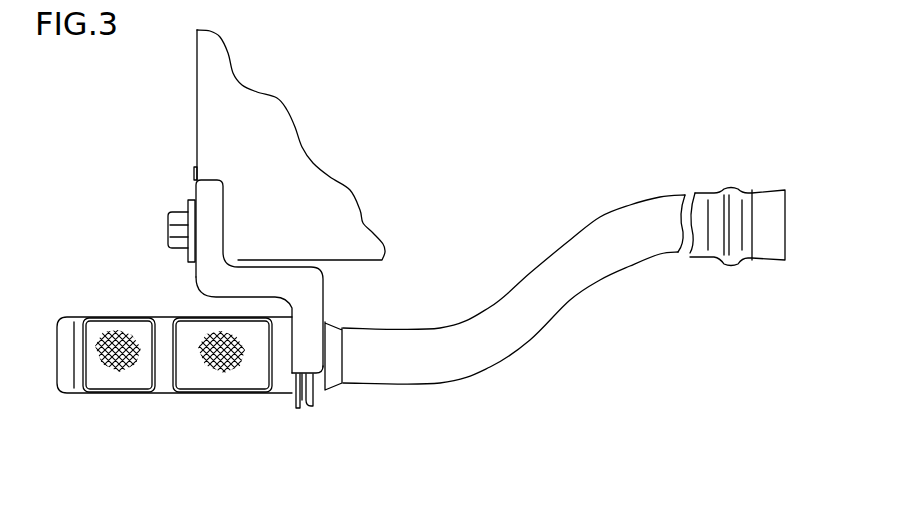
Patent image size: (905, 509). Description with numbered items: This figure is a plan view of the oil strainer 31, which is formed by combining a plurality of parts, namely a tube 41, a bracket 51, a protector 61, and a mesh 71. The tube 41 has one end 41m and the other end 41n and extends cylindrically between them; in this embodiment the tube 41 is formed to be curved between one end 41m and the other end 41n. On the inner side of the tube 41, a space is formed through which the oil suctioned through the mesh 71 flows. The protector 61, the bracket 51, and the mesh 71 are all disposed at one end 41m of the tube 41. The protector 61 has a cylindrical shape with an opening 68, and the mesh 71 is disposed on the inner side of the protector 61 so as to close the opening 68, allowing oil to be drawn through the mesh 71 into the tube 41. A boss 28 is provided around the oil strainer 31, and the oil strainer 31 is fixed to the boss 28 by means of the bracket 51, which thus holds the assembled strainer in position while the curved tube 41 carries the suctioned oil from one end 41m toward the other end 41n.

The boss 28 is at (217, 105).
The bracket 51 is at (200, 196).
The oil strainer 31 is at (131, 271).
The protector 61 is at (67, 395).
The opening 68 is at (86, 368).
The mesh 71 is at (225, 380).
The one end 41m is at (321, 384).
The tube 41 is at (520, 337).
The other end 41n is at (770, 248).